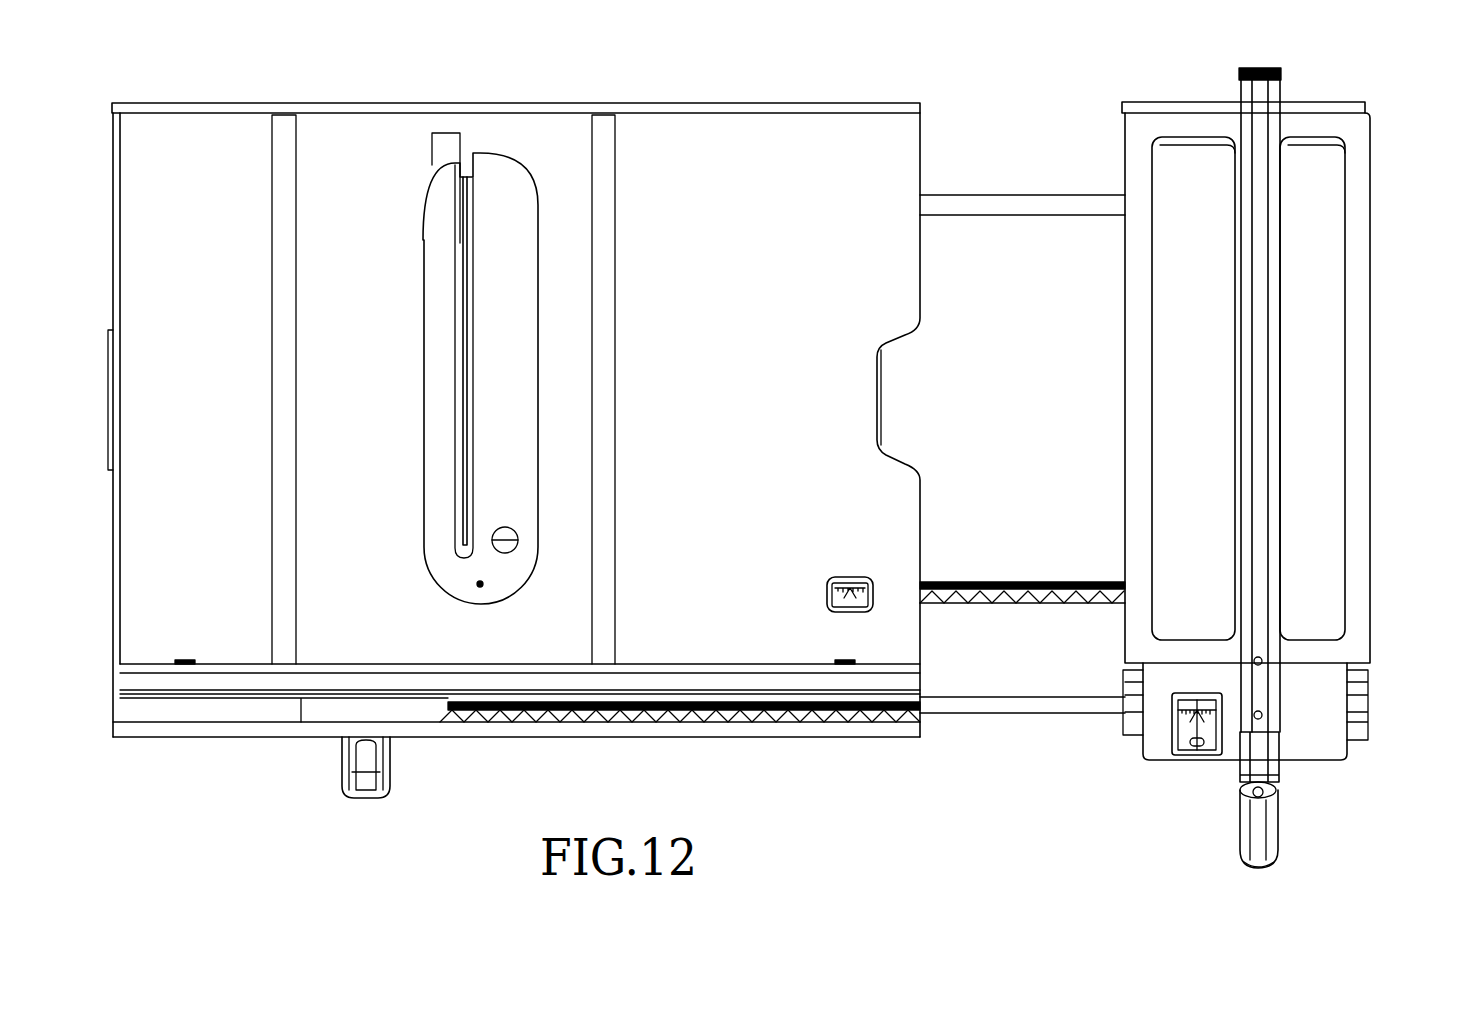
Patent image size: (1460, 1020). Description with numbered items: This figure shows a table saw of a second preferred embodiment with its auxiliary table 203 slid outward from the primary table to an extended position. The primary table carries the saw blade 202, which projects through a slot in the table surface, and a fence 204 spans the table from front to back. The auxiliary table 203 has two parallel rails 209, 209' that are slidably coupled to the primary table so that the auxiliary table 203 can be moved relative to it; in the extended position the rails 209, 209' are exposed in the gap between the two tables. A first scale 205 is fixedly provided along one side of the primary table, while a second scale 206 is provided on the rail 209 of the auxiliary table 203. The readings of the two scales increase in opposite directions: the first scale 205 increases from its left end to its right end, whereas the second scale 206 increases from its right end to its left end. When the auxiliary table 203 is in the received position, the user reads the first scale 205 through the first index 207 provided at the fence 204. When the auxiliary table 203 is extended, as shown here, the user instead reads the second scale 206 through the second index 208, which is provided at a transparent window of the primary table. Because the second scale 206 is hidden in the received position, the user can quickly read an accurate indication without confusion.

The saw blade 202 is at (462, 260).
The auxiliary table 203 is at (1315, 353).
The fence 204 is at (1268, 460).
The first scale 205 is at (800, 713).
The second scale 206 is at (1000, 600).
The first index 207 is at (1198, 725).
The second index 208 is at (853, 600).
The rail 209 is at (1028, 710).
The rail 209' is at (1022, 162).